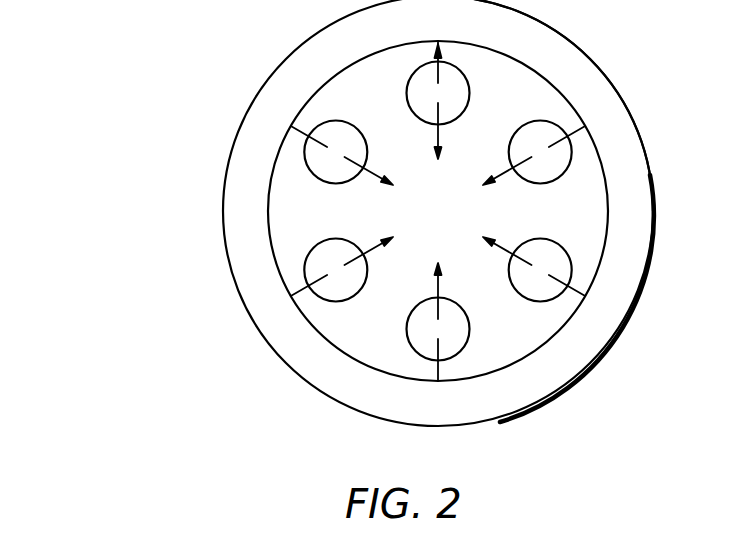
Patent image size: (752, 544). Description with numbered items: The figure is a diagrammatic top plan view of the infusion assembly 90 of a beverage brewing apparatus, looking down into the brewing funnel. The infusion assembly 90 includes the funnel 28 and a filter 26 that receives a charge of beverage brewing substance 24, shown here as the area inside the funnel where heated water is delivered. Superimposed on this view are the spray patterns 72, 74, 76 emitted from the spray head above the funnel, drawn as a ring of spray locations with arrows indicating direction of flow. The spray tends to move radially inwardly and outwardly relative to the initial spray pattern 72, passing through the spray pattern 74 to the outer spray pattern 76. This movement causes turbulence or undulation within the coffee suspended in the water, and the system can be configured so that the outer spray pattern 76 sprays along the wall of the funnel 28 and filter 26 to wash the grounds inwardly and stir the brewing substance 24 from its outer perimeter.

The infusion assembly 90 is at (157, 72).
The beverage brewing substance 24 is at (293, 210).
The filter 26 is at (313, 330).
The funnel 28 is at (256, 327).
The initial spray pattern 72 is at (438, 328).
The spray pattern 74 is at (440, 284).
The outer spray pattern 76 is at (438, 376).